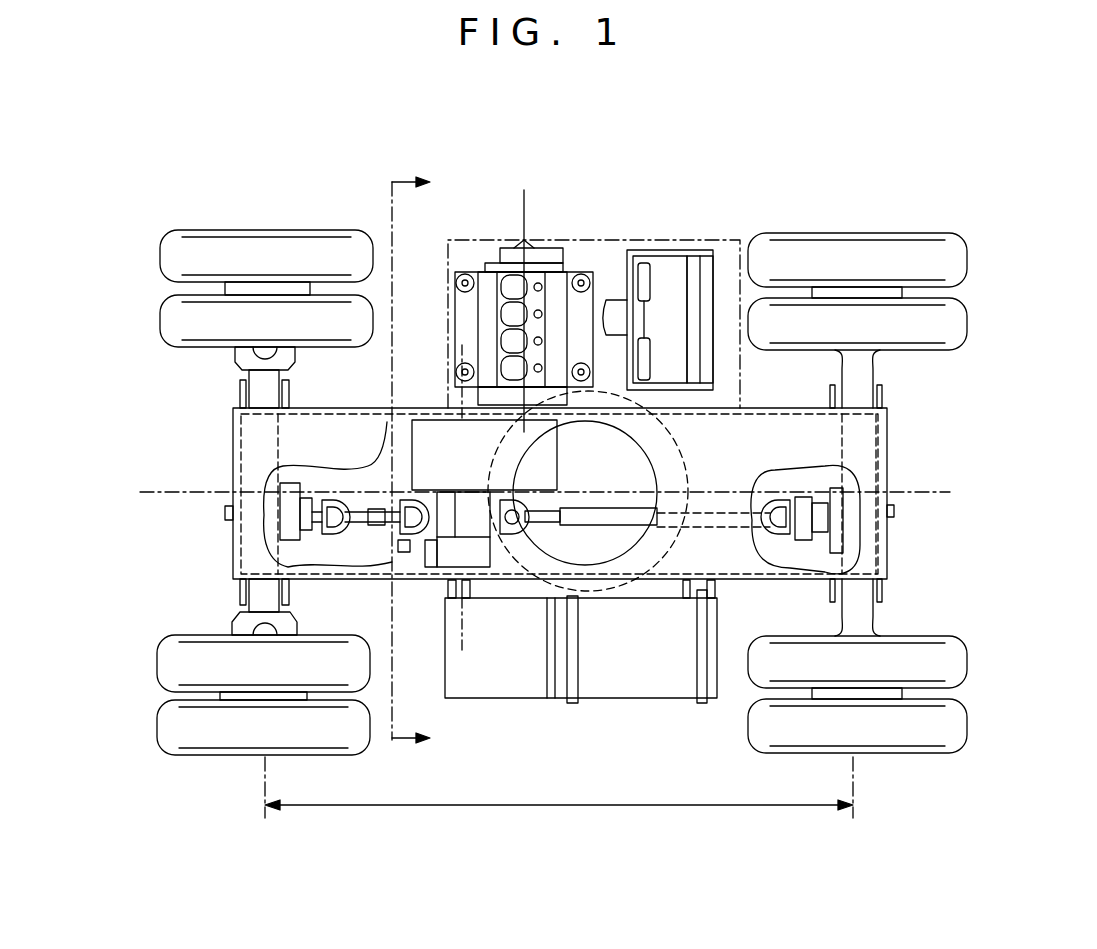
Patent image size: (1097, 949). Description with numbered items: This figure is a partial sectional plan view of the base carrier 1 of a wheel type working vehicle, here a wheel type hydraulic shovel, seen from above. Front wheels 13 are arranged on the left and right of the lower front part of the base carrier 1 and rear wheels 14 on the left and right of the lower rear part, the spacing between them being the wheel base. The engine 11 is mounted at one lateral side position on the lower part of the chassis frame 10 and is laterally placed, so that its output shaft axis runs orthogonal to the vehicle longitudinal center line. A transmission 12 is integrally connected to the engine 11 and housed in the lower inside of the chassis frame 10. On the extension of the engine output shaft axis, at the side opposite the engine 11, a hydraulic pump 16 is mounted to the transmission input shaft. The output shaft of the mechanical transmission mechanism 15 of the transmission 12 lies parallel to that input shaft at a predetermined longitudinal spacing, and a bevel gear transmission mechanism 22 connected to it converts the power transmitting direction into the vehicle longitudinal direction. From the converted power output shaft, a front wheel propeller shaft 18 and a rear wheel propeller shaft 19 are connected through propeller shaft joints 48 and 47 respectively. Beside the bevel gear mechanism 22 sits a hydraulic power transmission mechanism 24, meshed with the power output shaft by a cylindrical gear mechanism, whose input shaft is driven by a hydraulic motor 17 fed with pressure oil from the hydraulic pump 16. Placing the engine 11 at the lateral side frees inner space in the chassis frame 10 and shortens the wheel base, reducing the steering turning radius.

The base carrier 1 is at (737, 216).
The chassis frame 10 is at (232, 441).
The engine 11 is at (513, 285).
The transmission 12 is at (445, 408).
The front wheels 13 is at (236, 240).
The rear wheels 14 is at (880, 248).
The mechanical transmission mechanism 15 is at (427, 418).
The hydraulic pump 16 is at (545, 506).
The hydraulic motor 17 is at (403, 562).
The front wheel propeller shaft 18 is at (357, 524).
The rear wheel propeller shaft 19 is at (628, 520).
The bevel gear transmission mechanism 22 is at (490, 565).
The hydraulic power transmission mechanism 24 is at (478, 565).
The propeller shaft joint 47 is at (525, 578).
The propeller shaft joint 48 is at (410, 545).